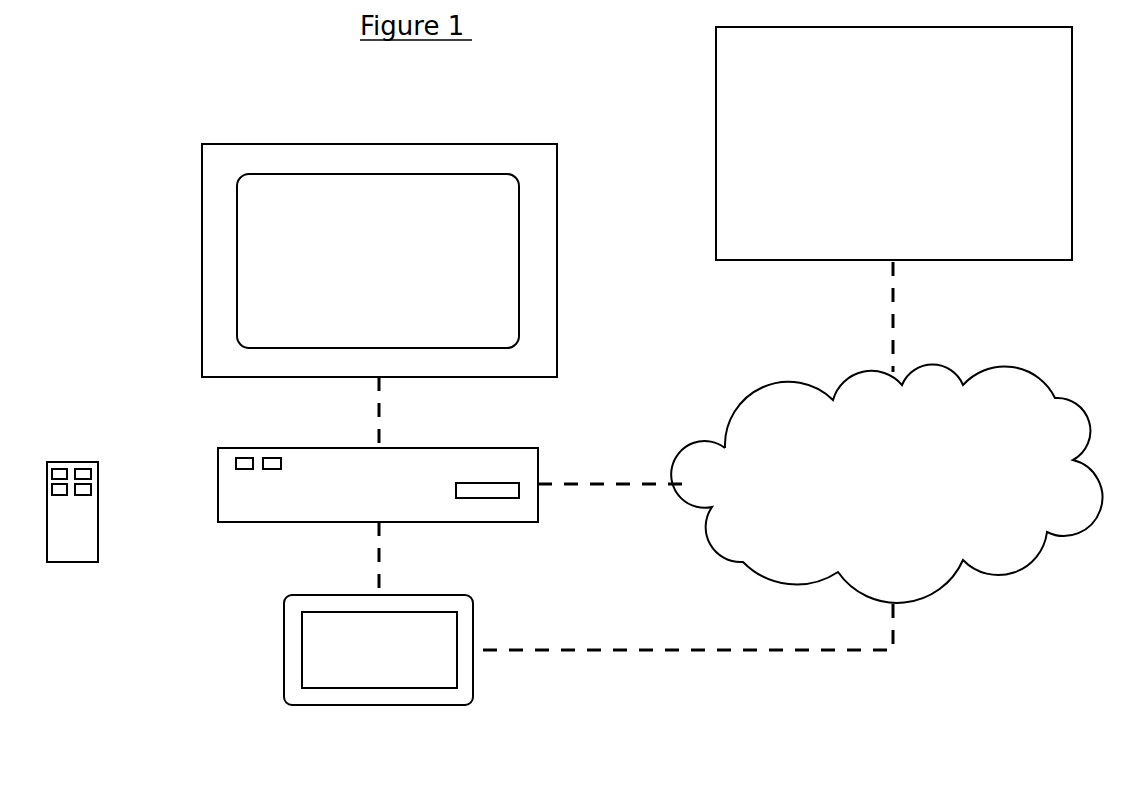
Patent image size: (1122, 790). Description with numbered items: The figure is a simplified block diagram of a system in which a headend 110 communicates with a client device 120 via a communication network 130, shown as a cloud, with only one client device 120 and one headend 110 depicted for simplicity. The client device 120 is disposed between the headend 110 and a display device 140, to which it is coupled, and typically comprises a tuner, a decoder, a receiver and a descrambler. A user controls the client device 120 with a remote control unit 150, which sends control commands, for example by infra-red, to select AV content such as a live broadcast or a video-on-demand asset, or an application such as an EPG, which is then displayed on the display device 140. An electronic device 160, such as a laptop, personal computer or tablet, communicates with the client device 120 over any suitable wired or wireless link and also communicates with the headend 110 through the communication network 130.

The headend 110 is at (911, 160).
The client device 120 is at (243, 523).
The communication network 130 is at (762, 403).
The display device 140 is at (226, 146).
The remote control unit 150 is at (60, 462).
The electronic device 160 is at (289, 701).